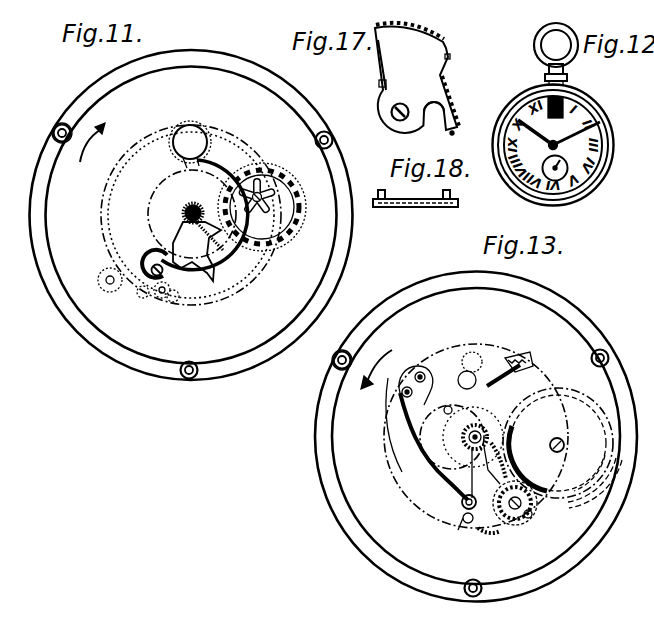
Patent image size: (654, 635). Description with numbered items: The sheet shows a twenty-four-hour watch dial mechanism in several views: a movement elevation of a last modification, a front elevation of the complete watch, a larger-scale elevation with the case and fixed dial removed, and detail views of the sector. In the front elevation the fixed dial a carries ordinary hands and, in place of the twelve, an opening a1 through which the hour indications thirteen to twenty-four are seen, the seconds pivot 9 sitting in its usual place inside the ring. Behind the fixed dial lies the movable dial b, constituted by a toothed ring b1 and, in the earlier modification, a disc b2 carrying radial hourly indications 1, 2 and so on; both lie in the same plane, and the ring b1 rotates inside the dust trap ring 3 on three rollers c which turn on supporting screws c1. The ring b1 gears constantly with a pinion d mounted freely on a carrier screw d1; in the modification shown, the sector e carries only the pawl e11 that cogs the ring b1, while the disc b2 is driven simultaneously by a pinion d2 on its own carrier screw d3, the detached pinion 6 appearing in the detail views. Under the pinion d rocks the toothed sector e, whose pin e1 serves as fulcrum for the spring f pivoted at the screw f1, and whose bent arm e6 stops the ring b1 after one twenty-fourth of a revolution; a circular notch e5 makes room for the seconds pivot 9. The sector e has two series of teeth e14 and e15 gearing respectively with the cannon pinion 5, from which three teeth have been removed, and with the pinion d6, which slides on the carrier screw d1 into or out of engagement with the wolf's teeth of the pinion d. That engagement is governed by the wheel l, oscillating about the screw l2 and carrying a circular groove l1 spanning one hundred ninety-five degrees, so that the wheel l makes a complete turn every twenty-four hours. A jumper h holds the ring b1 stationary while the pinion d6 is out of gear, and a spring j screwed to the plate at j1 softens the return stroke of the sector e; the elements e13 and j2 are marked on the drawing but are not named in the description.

In FIG. 11, the hourly indication 1 is at (123, 183).
In FIG. 13, the hourly indication 1 is at (445, 357).
In FIG. 12, the hourly indication 2 is at (590, 110).
In FIG. 13, the dust trap ring 3 is at (543, 293).
In FIG. 11, the cannon pinion 5 is at (184, 212).
In FIG. 13, the cannon pinion 5 is at (470, 440).
In FIG. 11, the pinion 6 is at (214, 156).
In FIG. 13, the seconds pivot 9 is at (464, 521).
In FIG. 12, the seconds pivot 9 is at (563, 172).
In FIG. 12, the fixed dial a is at (592, 118).
In FIG. 12, the opening a1 is at (562, 95).
In FIG. 13, the movable dial b is at (447, 298).
In FIG. 11, the ring b1 is at (180, 77).
In FIG. 13, the ring b1 is at (452, 300).
In FIG. 11, the disc b2 is at (112, 202).
In FIG. 11, the roller c is at (61, 124).
In FIG. 13, the roller c is at (333, 360).
In FIG. 11, the supporting screw c1 is at (52, 133).
In FIG. 13, the supporting screw c1 is at (341, 351).
In FIG. 13, the pinion d is at (532, 508).
In FIG. 11, the carrier screw d1 is at (146, 262).
In FIG. 13, the carrier screw d1 is at (522, 515).
In FIG. 11, the pinion d2 is at (268, 196).
In FIG. 11, the carrier screw d3 is at (288, 212).
In FIG. 13, the pinion d6 is at (532, 517).
In FIG. 11, the toothed sector e is at (192, 256).
In FIG. 13, the toothed sector e is at (462, 477).
In FIG. 17, the toothed sector e is at (403, 65).
In FIG. 18, the toothed sector e is at (410, 208).
In FIG. 17, the pin e1 is at (379, 85).
In FIG. 18, the pin e1 is at (380, 191).
In FIG. 17, the circular notch e5 is at (447, 131).
In FIG. 17, the bent arm e6 is at (452, 58).
In FIG. 18, the bent arm e6 is at (451, 195).
In FIG. 11, the pawl e11 is at (143, 291).
In FIG. 13, the pivot hole e13 is at (461, 505).
In FIG. 17, the pivot hole e13 is at (396, 117).
In FIG. 13, the teeth e14 is at (511, 452).
In FIG. 17, the teeth e14 is at (446, 37).
In FIG. 13, the teeth e15 is at (496, 532).
In FIG. 17, the teeth e15 is at (456, 97).
In FIG. 11, the spring f is at (191, 253).
In FIG. 13, the spring f is at (415, 448).
In FIG. 13, the screw f1 is at (383, 392).
In FIG. 13, the jumper h is at (500, 375).
In FIG. 11, the spring j is at (127, 284).
In FIG. 11, the screw fixing j1 is at (106, 279).
In FIG. 11, the pinion j2 is at (175, 296).
In FIG. 13, the wheel l is at (593, 392).
In FIG. 13, the circular groove l1 is at (521, 441).
In FIG. 13, the screw l2 is at (565, 444).